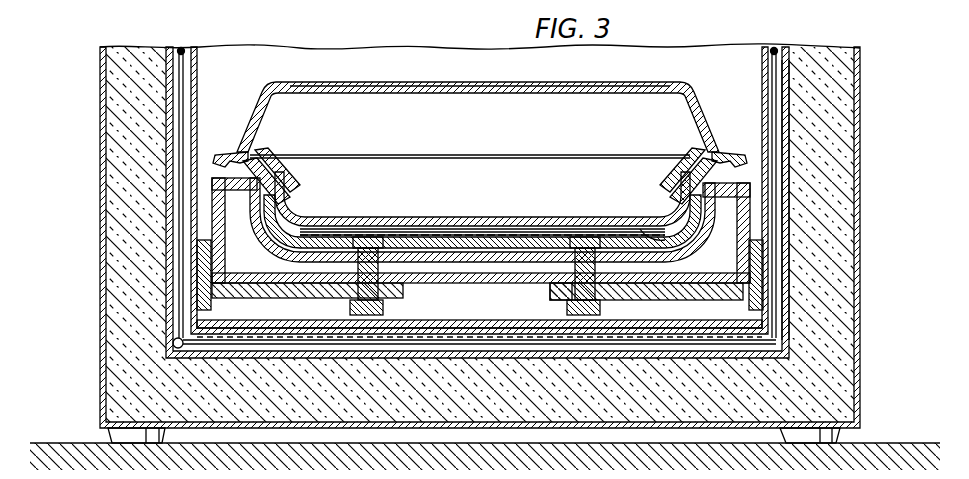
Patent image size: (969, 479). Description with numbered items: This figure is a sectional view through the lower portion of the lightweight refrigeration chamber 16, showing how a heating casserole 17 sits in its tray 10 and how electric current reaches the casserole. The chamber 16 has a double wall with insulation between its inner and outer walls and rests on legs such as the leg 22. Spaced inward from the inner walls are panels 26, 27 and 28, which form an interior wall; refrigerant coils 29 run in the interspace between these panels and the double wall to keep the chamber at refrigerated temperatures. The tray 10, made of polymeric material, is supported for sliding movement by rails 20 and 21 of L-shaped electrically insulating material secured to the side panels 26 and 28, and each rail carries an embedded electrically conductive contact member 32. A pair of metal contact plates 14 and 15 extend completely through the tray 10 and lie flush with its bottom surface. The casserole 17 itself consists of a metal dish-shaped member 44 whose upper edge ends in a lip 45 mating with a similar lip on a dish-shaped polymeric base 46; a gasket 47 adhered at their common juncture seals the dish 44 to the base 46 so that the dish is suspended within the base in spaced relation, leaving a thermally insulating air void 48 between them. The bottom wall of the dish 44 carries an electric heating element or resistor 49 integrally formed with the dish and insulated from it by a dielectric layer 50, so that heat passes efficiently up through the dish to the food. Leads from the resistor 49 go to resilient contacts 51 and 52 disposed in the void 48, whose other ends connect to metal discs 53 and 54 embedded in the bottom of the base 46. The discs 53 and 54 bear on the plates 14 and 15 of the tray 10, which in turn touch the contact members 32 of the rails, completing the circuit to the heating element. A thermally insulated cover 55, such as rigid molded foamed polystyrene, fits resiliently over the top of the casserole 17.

The tray 10 is at (738, 186).
The metal contact plate 14 is at (345, 296).
The metal contact plate 15 is at (568, 299).
The refrigeration chamber 16 is at (100, 95).
The heating casserole 17 is at (606, 87).
The rail 20 is at (272, 298).
The rail 21 is at (672, 298).
The leg 22 is at (105, 437).
The side panel 26 is at (762, 101).
The panel 27 is at (470, 323).
The side panel 28 is at (198, 67).
The coil 29 is at (282, 334).
The contact member 32 is at (380, 307).
The dish-shaped member 44 is at (537, 217).
The lip 45 is at (262, 162).
The base 46 is at (245, 160).
The gasket 47 is at (282, 178).
The air void 48 is at (440, 237).
The heating element 49 is at (476, 232).
The dielectric layer 50 is at (507, 226).
The resilient contact 51 is at (337, 233).
The resilient contact 52 is at (612, 238).
The metal disc 53 is at (372, 238).
The metal disc 54 is at (580, 238).
The cover 55 is at (440, 90).